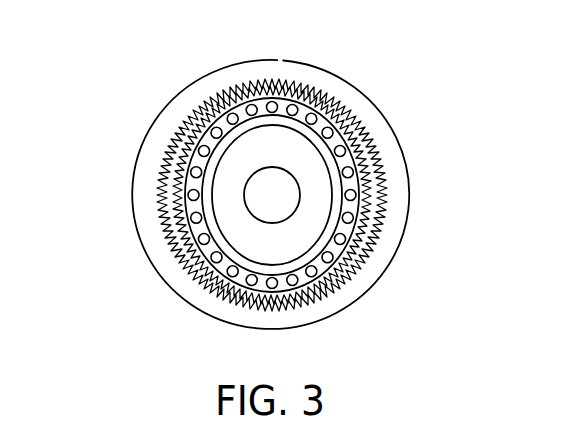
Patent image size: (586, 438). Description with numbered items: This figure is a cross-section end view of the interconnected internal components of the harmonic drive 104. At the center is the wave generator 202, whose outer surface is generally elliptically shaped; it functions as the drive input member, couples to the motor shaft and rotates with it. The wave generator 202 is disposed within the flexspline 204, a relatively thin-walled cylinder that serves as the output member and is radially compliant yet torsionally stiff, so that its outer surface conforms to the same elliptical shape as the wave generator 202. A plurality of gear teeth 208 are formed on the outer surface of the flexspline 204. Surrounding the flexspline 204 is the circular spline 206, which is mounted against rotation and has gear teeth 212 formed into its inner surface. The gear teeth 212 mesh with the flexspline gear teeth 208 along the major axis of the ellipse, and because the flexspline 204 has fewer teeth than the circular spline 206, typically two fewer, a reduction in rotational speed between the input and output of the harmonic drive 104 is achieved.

The harmonic drive 104 is at (148, 88).
The wave generator 202 is at (278, 127).
The flexspline 204 is at (358, 218).
The circular spline 206 is at (371, 273).
The flexspline gear teeth 208 is at (176, 176).
The circular spline gear teeth 212 is at (377, 174).